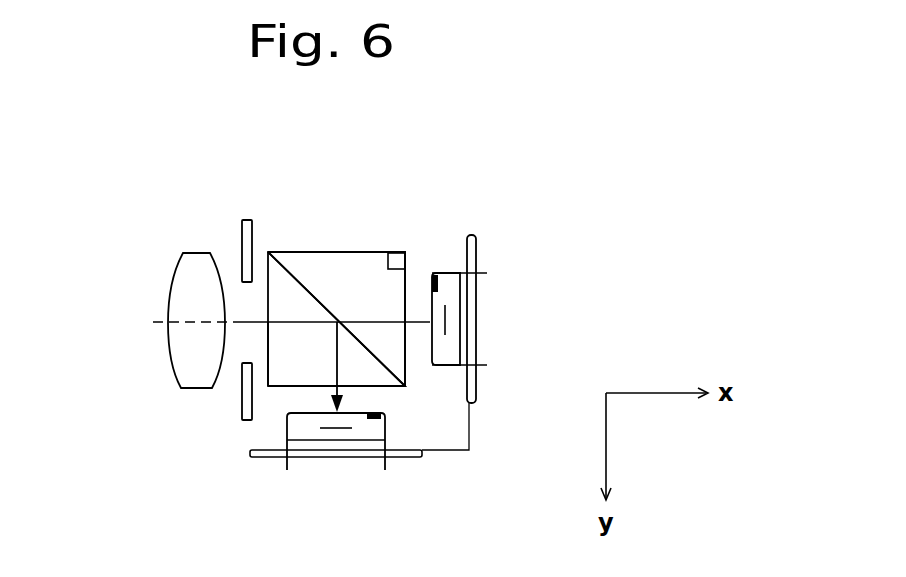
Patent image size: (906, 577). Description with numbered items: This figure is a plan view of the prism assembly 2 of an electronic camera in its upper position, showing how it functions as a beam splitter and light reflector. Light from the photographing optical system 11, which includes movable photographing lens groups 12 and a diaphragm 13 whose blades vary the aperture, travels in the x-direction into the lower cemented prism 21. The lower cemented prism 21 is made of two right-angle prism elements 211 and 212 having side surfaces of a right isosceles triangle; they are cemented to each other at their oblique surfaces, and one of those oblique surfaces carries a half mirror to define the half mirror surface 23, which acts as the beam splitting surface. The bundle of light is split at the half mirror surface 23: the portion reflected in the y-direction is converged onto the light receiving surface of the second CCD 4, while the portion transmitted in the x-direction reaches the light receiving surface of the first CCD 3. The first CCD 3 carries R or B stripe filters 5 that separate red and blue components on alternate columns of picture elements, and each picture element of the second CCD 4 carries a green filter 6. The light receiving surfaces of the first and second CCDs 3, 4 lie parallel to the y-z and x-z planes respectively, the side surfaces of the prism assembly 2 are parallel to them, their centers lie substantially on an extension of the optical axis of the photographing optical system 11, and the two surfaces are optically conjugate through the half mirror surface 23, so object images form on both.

The photographing optical system 11 is at (208, 430).
The photographing lens groups 12 is at (182, 282).
The diaphragm 13 is at (241, 220).
The prism assembly 2 is at (323, 235).
The lower cemented prism 21 is at (353, 238).
The right-angle prism element 211 is at (318, 298).
The right-angle prism element 212 is at (283, 334).
The half mirror surface 23 is at (363, 282).
The first CCD 3 is at (449, 283).
The second CCD 4 is at (365, 428).
The R or B stripe filter 5 is at (435, 300).
The green filter 6 is at (305, 415).